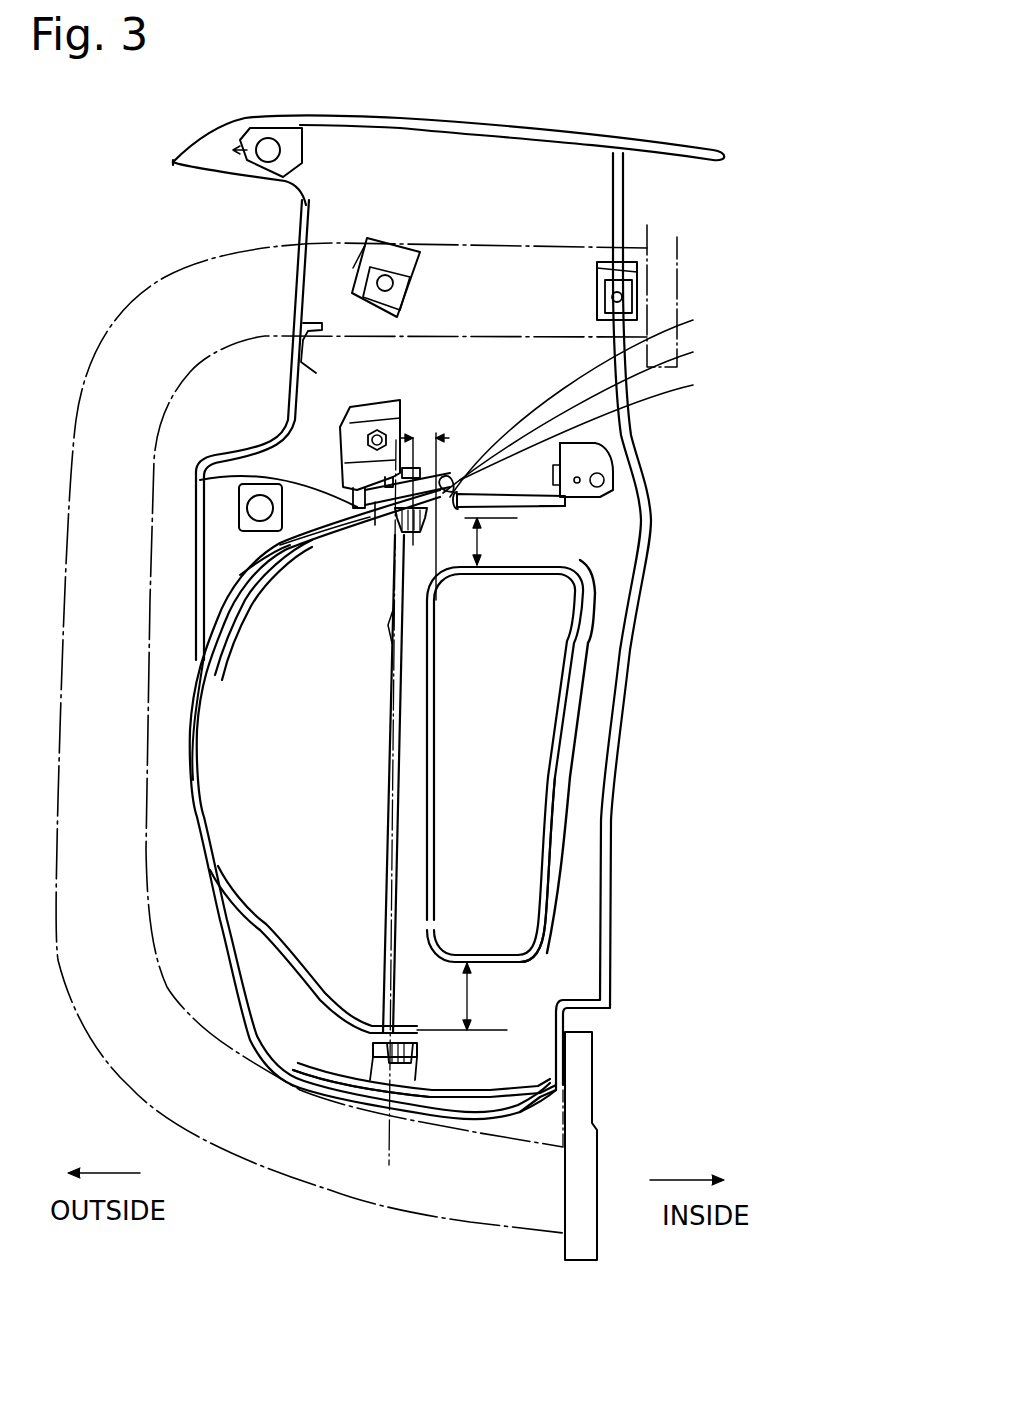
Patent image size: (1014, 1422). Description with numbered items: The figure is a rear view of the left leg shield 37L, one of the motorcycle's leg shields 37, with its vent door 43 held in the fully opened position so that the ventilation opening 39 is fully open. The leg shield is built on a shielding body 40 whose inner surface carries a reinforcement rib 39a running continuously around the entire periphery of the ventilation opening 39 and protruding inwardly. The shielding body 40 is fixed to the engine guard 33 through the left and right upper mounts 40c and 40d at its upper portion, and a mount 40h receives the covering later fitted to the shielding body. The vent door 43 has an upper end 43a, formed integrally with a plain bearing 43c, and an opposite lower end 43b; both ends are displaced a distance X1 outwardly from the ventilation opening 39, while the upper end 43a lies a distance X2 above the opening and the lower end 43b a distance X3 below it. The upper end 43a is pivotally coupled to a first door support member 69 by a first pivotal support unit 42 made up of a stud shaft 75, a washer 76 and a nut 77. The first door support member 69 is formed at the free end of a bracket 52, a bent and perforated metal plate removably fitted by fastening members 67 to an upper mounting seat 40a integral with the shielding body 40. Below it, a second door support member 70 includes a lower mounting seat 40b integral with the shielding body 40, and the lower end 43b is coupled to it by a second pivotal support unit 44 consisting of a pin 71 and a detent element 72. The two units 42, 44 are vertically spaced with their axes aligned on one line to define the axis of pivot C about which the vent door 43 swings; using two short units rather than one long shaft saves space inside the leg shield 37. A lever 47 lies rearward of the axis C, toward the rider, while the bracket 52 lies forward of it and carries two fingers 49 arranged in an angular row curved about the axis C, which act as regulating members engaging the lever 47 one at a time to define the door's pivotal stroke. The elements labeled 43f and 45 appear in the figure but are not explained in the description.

The engine guard 33 is at (52, 945).
The left leg shield 37L is at (717, 142).
The leg shield 37 is at (510, 146).
The ventilation opening 39 is at (555, 823).
The reinforcement rib 39a is at (553, 940).
The shielding body 40 is at (607, 222).
The upper mounting seat 40a is at (366, 408).
The lower mounting seat 40b is at (525, 1082).
The left upper mount 40c is at (378, 255).
The right upper mount 40d is at (597, 278).
The mount 40h is at (239, 510).
The first pivotal support unit 42 is at (612, 396).
The vent door 43 is at (233, 850).
The upper end 43a is at (280, 545).
The lower end 43b is at (300, 1072).
The bearing 43c is at (253, 573).
The panel side wall 43f is at (192, 686).
The second pivotal support unit 44 is at (386, 853).
The bracket 45 is at (575, 443).
The lever 47 is at (520, 486).
The fingers 49 is at (200, 480).
The bracket 52 is at (550, 530).
The fastening members 67 is at (347, 423).
The first door support member 69 is at (340, 470).
The second door support member 70 is at (612, 1146).
The pin 71 is at (377, 1057).
The detent element 72 is at (398, 1067).
The stud shaft 75 is at (595, 424).
The washer 76 is at (586, 414).
The nut 77 is at (590, 396).
The axis of pivot C is at (445, 980).
The distance X1 is at (423, 437).
The distance X2 is at (462, 568).
The distance X3 is at (470, 1000).